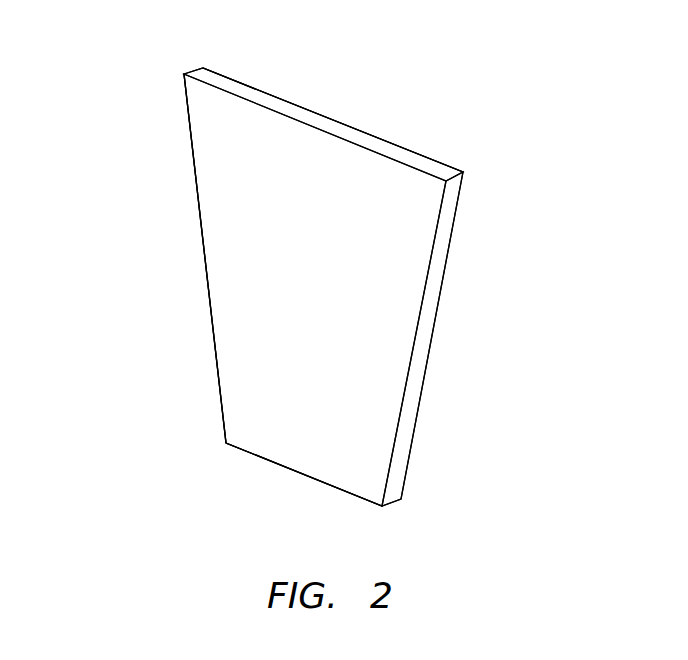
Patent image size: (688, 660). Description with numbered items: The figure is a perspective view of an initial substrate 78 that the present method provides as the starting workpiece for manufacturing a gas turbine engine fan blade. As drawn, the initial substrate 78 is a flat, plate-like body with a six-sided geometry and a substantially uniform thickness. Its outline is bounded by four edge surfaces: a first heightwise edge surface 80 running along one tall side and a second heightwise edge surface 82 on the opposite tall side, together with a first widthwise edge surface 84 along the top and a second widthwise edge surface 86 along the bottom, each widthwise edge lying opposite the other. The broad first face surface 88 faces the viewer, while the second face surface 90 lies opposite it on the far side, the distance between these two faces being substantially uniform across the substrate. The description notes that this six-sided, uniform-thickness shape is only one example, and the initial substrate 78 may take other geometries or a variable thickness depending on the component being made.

The initial substrate 78 is at (158, 177).
The first heightwise edge surface 80 is at (413, 355).
The second heightwise edge surface 82 is at (212, 318).
The first widthwise edge surface 84 is at (376, 140).
The second widthwise edge surface 86 is at (287, 468).
The first face surface 88 is at (335, 289).
The second face surface 90 is at (292, 104).